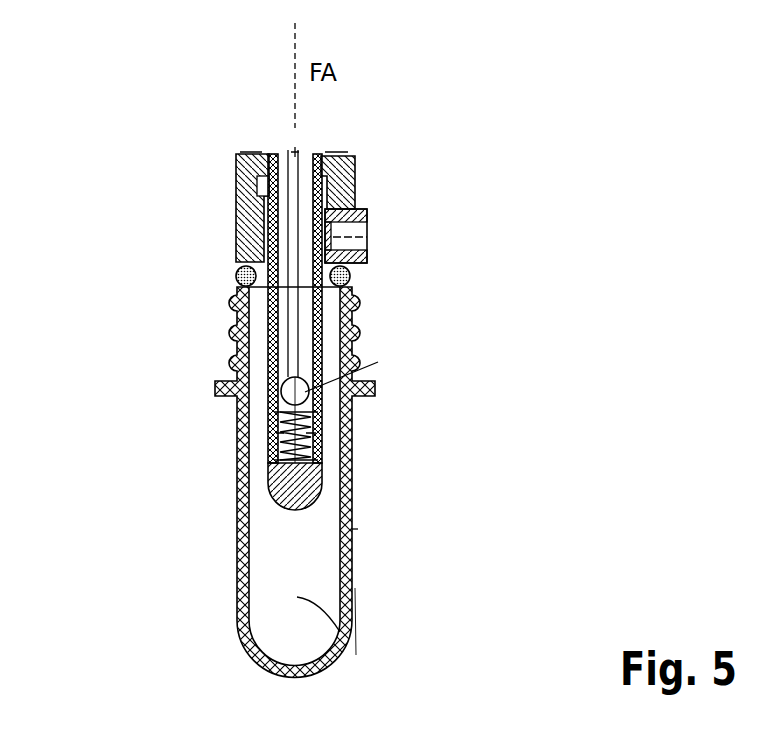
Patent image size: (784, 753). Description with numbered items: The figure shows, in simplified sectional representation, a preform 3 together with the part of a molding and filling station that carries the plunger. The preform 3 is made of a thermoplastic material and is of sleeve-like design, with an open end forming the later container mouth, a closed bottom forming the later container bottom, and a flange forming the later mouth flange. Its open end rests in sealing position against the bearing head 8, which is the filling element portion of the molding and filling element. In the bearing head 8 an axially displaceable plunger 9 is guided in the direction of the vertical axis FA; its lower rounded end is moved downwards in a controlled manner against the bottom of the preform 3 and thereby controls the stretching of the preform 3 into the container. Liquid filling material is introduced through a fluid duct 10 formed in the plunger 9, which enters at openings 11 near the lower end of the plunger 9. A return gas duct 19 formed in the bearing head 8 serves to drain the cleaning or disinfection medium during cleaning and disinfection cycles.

The preform 3 is at (363, 342).
The bearing head 8 is at (237, 172).
The plunger 9 is at (277, 362).
The fluid duct 10 is at (293, 305).
The opening 11 is at (389, 484).
The return gas duct 19 is at (358, 230).